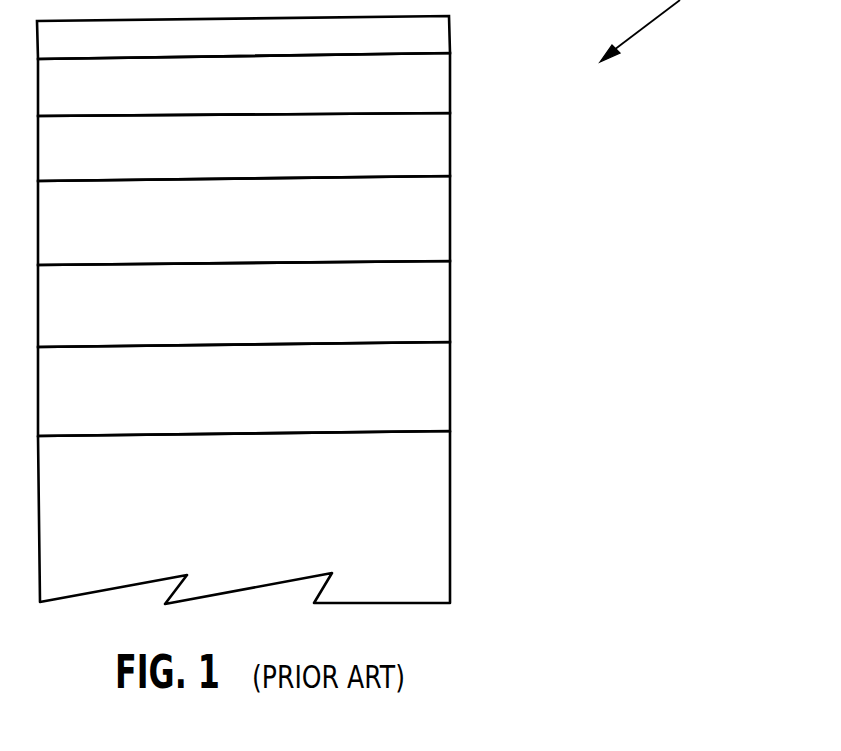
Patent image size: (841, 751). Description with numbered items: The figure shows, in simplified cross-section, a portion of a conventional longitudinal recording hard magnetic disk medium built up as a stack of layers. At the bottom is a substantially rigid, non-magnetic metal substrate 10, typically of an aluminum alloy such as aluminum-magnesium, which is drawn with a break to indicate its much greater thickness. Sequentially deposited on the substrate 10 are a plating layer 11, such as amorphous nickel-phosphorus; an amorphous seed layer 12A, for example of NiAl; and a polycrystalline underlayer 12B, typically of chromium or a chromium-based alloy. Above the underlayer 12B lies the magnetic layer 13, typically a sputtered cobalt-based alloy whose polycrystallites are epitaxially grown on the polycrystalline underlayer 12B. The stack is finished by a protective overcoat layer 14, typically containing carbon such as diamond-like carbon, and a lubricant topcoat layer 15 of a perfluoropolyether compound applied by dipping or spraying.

The non-magnetic metal substrate 10 is at (449, 527).
The plating layer 11 is at (447, 383).
The amorphous seed layer 12A is at (449, 306).
The polycrystalline underlayer 12B is at (449, 240).
The magnetic layer 13 is at (449, 150).
The protective overcoat layer 14 is at (448, 89).
The lubricant topcoat layer 15 is at (449, 38).